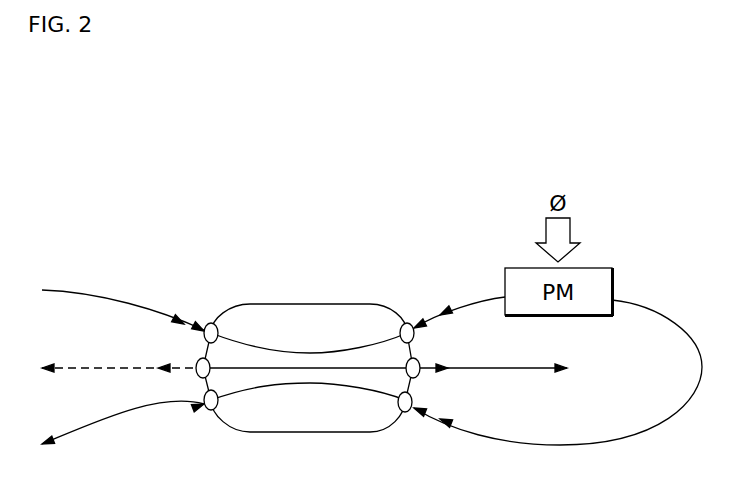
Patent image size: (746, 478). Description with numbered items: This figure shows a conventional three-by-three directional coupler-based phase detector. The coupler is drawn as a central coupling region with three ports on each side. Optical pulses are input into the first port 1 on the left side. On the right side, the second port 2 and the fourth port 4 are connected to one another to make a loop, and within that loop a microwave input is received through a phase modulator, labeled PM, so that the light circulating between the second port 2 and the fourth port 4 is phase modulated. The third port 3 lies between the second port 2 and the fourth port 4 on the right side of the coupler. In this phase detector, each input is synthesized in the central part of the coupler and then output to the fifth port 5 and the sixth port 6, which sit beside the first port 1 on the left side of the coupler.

The first port 1 is at (211, 333).
The second port 2 is at (407, 333).
The third port 3 is at (413, 368).
The fourth port 4 is at (405, 402).
The fifth port 5 is at (203, 368).
The sixth port 6 is at (211, 400).